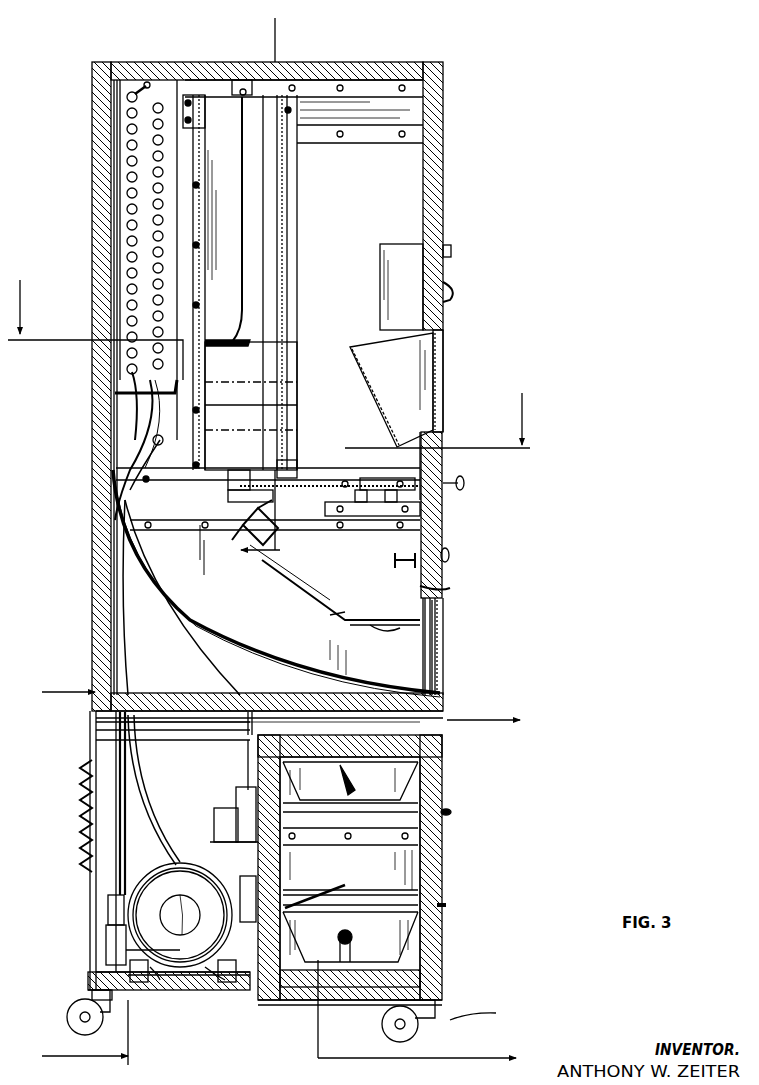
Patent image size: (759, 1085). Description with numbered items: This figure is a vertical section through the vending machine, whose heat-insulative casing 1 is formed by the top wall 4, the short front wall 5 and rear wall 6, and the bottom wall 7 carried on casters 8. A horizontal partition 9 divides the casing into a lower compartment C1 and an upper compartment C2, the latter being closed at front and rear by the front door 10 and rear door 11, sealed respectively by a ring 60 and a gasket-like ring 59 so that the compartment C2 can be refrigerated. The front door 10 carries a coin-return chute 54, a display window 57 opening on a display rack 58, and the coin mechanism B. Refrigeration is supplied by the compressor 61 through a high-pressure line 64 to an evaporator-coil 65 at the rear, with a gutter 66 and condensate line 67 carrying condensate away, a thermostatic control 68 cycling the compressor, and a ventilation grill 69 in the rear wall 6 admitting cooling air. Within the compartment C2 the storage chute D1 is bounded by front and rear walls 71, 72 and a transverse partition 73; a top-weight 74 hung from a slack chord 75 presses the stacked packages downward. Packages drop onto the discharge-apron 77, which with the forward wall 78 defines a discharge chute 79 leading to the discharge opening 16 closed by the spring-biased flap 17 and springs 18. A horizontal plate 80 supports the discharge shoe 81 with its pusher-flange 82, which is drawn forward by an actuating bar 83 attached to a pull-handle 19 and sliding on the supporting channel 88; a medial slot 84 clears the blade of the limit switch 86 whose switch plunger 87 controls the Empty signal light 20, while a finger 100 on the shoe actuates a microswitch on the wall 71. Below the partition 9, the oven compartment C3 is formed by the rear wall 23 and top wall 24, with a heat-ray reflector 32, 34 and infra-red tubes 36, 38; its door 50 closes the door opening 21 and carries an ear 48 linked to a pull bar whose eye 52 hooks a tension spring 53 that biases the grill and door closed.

The shell or casing 1 is at (380, 62).
The top wall 4 is at (164, 62).
The front wall 5 is at (442, 512).
The rear wall 6 is at (92, 913).
The bottom wall 7 is at (300, 972).
The casters 8 is at (72, 1010).
The horizontal partition 9 is at (447, 705).
The front door 10 is at (445, 142).
The rear door 11 is at (275, 18).
The discharge opening 16 is at (405, 652).
The closure flap 17 is at (435, 662).
The springs 18 is at (432, 622).
The pull-handles 19 is at (460, 486).
The signal light 20 is at (445, 552).
The door opening 21 is at (443, 812).
The rear wall 23 is at (250, 770).
The top wall 24 is at (302, 735).
The heat-ray reflector 32 is at (400, 940).
The heat-ray reflector 34 is at (405, 775).
The infra-red tube 36 is at (438, 908).
The infra-red tube 38 is at (430, 790).
The ear 48 is at (390, 912).
The door 50 is at (440, 852).
The eye 52 is at (338, 900).
The tension spring 53 is at (310, 896).
The coin-return chute 54 is at (450, 300).
The display window 57 is at (443, 378).
The display rack 58 is at (350, 368).
The gasket-like ring 59 is at (112, 62).
The ring 60 is at (433, 62).
The compressor 61 is at (183, 968).
The high-pressure line 64 is at (140, 440).
The evaporator-coil 65 is at (133, 158).
The gutter 66 is at (130, 390).
The condensate line 67 is at (140, 790).
The thermostatic control 68 is at (235, 792).
The ventilation grill 69 is at (84, 770).
The front wall 71 is at (285, 218).
The rear wall 72 is at (205, 148).
The transverse partition 73 is at (263, 253).
The top-weight 74 is at (285, 340).
The slack chord 75 is at (243, 296).
The discharge-apron 77 is at (222, 625).
The forward wall 78 is at (310, 590).
The discharge chute 79 is at (278, 620).
The horizontal plate 80 is at (305, 530).
The discharge shoe 81 is at (285, 440).
The pusher-flange 82 is at (225, 488).
The actuating bar 83 is at (318, 480).
The medial slot 84 is at (238, 500).
The limit switch 86 is at (270, 535).
The switch plunger 87 is at (210, 553).
The supporting channel 88 is at (355, 480).
The finger 100 is at (300, 470).
The coin-receiving and slug-rejecting mechanism B is at (380, 294).
The lower compartment C1 is at (128, 822).
The upper compartment C2 is at (395, 190).
The oven compartment C3 is at (438, 836).
The storage chute D1 is at (263, 190).